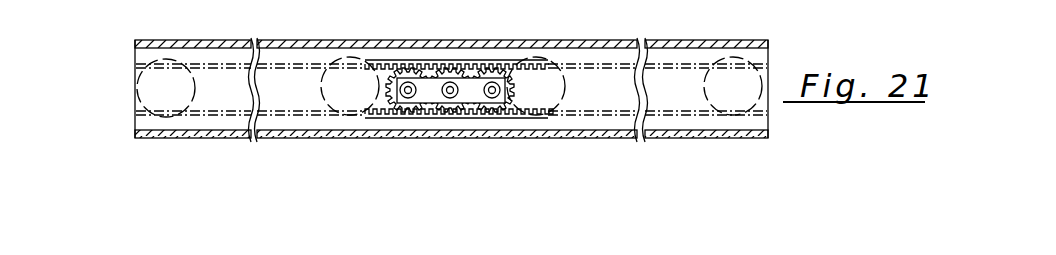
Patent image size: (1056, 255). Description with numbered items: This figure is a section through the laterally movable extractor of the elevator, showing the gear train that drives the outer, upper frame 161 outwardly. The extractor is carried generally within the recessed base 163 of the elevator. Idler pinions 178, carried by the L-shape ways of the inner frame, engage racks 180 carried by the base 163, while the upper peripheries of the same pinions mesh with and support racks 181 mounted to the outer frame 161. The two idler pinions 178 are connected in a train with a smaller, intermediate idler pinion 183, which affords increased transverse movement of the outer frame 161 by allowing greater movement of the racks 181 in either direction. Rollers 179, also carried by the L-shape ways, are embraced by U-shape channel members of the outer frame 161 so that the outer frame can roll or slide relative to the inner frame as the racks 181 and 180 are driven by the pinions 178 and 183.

The outer, upper frame 161 is at (612, 43).
The recessed base 163 is at (280, 137).
The rollers 179 is at (201, 84).
The racks 181 is at (407, 45).
The racks 180 is at (372, 118).
The idler pinions 178 is at (412, 106).
The intermediate idler pinion 183 is at (459, 103).